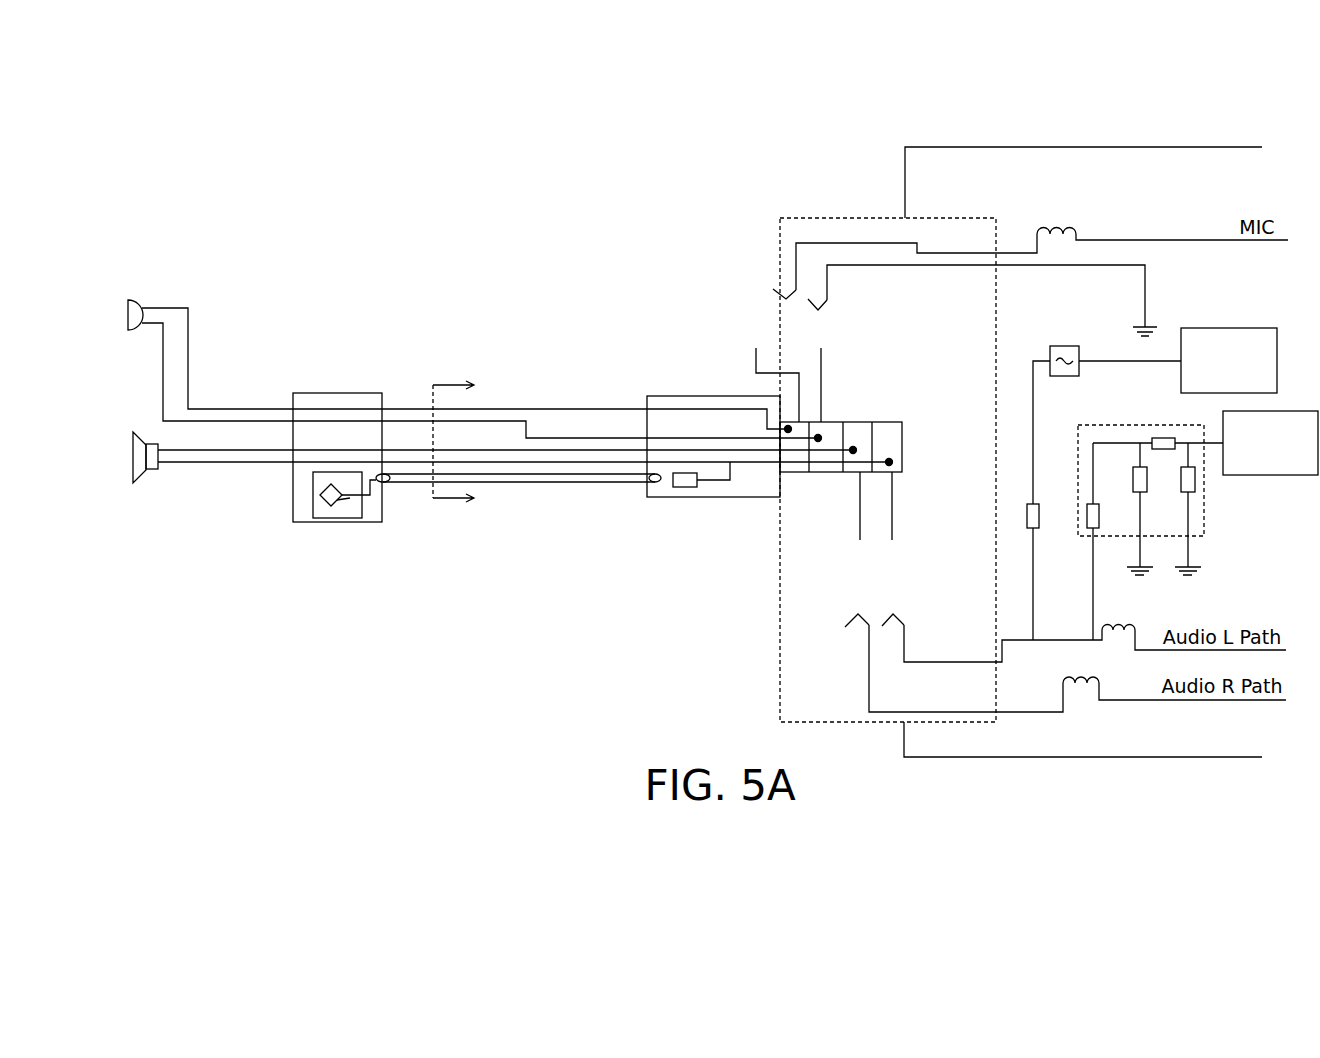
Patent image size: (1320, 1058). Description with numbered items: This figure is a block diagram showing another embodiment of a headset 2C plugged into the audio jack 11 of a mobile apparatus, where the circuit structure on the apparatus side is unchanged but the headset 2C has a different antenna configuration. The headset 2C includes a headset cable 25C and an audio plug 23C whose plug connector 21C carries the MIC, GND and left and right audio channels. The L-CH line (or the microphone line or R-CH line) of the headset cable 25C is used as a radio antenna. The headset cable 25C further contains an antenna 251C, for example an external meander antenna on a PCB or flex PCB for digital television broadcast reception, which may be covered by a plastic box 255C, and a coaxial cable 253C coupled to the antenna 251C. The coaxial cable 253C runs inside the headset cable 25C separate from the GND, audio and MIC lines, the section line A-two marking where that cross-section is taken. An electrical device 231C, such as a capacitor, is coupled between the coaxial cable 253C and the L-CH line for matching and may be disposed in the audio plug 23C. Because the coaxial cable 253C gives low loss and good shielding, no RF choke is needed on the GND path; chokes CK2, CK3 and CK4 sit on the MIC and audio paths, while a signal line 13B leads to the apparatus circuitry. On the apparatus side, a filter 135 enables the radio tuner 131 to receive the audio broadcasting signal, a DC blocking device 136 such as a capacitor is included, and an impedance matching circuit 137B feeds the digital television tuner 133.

The headset cable 25C is at (197, 570).
The headset 2C is at (563, 381).
The plastic box 255C is at (338, 393).
The antenna 251C is at (313, 495).
The coaxial cable 253C is at (575, 484).
The audio plug 23C is at (712, 498).
The electrical device 231C is at (686, 488).
The plug connector 21C is at (822, 492).
The audio jack 11 is at (996, 283).
The signal line 13B is at (1118, 147).
The choke CK2 is at (1030, 248).
The choke CK3 is at (1084, 628).
The choke CK4 is at (1065, 663).
The filter 135 is at (1063, 346).
The DC blocking device 136 is at (1040, 513).
The radio tuner 131 is at (1228, 328).
The impedance matching circuit 137B is at (1138, 425).
The digital television tuner 133 is at (1268, 477).